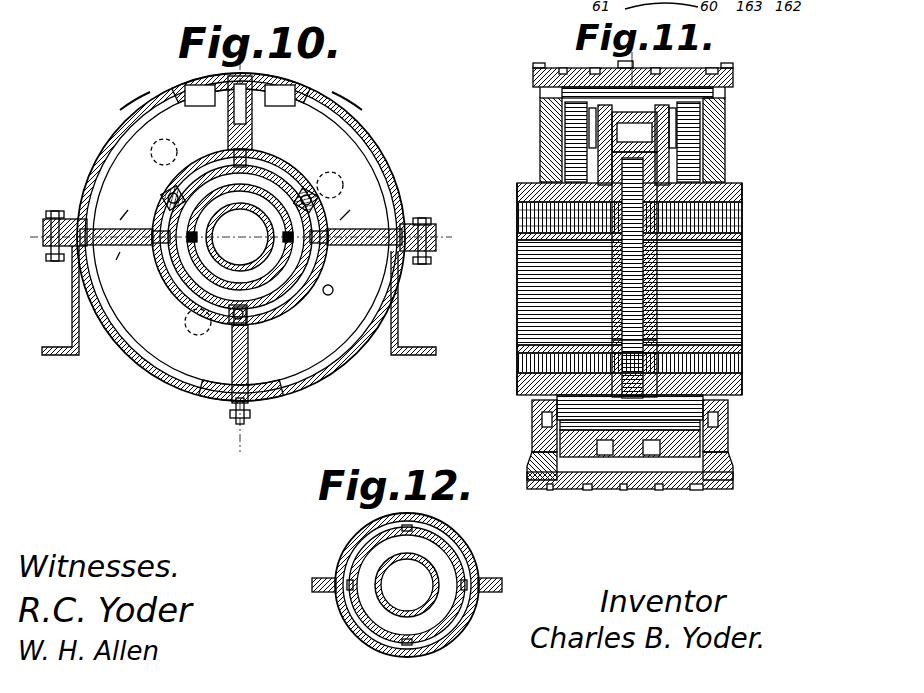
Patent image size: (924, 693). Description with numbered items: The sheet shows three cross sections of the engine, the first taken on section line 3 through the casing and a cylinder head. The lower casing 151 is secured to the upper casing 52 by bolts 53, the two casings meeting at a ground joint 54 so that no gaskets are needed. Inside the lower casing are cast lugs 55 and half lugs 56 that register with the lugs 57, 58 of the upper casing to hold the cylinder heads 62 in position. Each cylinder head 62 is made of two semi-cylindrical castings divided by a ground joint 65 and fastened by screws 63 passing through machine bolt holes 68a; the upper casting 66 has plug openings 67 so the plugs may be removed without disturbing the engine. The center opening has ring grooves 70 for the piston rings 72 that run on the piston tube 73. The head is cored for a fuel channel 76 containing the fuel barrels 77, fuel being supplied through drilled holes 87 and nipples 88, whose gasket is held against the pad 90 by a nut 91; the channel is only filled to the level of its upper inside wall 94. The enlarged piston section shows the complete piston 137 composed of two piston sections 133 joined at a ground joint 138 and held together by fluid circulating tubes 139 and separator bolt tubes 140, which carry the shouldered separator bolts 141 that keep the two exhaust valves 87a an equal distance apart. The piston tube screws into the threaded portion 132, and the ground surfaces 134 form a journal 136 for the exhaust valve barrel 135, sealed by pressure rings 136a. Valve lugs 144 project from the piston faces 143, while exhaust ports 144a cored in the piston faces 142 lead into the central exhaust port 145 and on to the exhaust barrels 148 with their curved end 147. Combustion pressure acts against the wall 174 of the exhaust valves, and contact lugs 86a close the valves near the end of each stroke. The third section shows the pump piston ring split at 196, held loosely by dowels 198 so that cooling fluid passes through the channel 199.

In FIG. 10, the section line 3 is at (241, 251).
In FIG. 10, the upper casing 52 is at (362, 132).
In FIG. 10, the bolts 53 is at (55, 218).
In FIG. 10, the ground joint 54 is at (40, 262).
In FIG. 10, the lugs 55 is at (215, 385).
In FIG. 10, the half lugs 56 is at (72, 285).
In FIG. 10, the lugs 57 is at (95, 182).
In FIG. 10, the lugs 58 is at (135, 115).
In FIG. 10, the cylinder head 62 is at (233, 275).
In FIG. 10, the screws 63 is at (235, 209).
In FIG. 10, the ground joint 65 is at (121, 257).
In FIG. 10, the upper casting 66 is at (282, 160).
In FIG. 10, the plug openings 67 is at (228, 126).
In FIG. 10, the machine bolt holes 68a is at (241, 221).
In FIG. 10, the piston rings 72 is at (240, 237).
In FIG. 10, the piston tube 73 is at (200, 246).
In FIG. 10, the fuel channel 76 is at (290, 285).
In FIG. 10, the fuel barrels 77 is at (247, 237).
In FIG. 10, the drilled holes 87 is at (248, 338).
In FIG. 10, the nipples 88 is at (250, 412).
In FIG. 10, the pad 90 is at (236, 404).
In FIG. 10, the nut 91 is at (222, 430).
In FIG. 10, the upper inside wall 94 is at (250, 156).
In FIG. 10, the shouldered separator bolts 141 is at (240, 237).
In FIG. 11, the shouldered separator bolts 141 is at (690, 476).
In FIG. 10, the lower casing 151 is at (305, 390).
In FIG. 11, the ring grooves 70 is at (726, 66).
In FIG. 11, the contact lugs 86a is at (532, 448).
In FIG. 11, the exhaust valves 87a is at (542, 118).
In FIG. 11, the threaded portion 132 is at (517, 212).
In FIG. 11, the piston sections 133 is at (582, 67).
In FIG. 11, the ground surfaces 134 is at (532, 405).
In FIG. 11, the exhaust valve barrel 135 is at (535, 178).
In FIG. 11, the journal 136 is at (522, 184).
In FIG. 11, the pressure rings 136a is at (517, 386).
In FIG. 11, the complete piston 137 is at (615, 63).
In FIG. 11, the ground joint 138 is at (645, 472).
In FIG. 11, the fluid circulating tubes 139 is at (634, 132).
In FIG. 11, the separator bolt tubes 140 is at (660, 258).
In FIG. 11, the piston faces 142 is at (562, 99).
In FIG. 11, the piston faces 143 is at (540, 80).
In FIG. 11, the valve lugs 144 is at (538, 66).
In FIG. 11, the exhaust ports 144a is at (540, 482).
In FIG. 11, the central exhaust port 145 is at (660, 290).
In FIG. 11, the curved end 147 is at (612, 336).
In FIG. 11, the exhaust barrels 148 is at (520, 342).
In FIG. 11, the wall 174 is at (562, 136).
In FIG. 12, the split 196 is at (395, 640).
In FIG. 12, the dowels 198 is at (345, 578).
In FIG. 12, the channel 199 is at (452, 620).